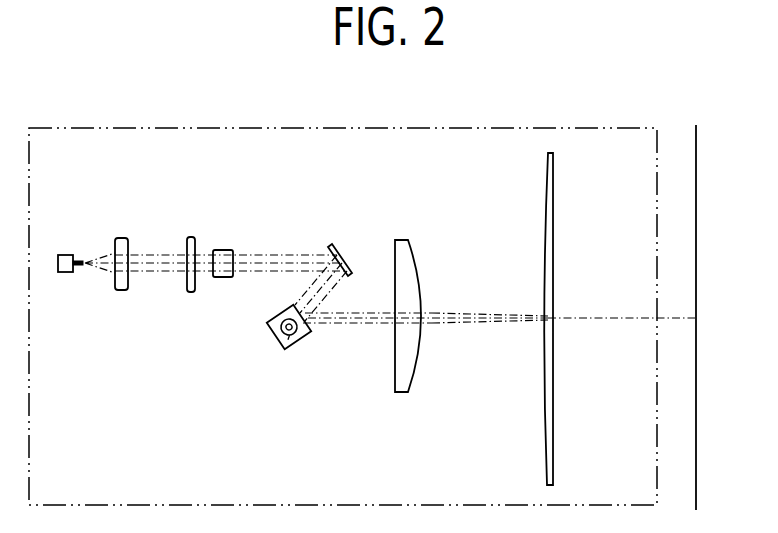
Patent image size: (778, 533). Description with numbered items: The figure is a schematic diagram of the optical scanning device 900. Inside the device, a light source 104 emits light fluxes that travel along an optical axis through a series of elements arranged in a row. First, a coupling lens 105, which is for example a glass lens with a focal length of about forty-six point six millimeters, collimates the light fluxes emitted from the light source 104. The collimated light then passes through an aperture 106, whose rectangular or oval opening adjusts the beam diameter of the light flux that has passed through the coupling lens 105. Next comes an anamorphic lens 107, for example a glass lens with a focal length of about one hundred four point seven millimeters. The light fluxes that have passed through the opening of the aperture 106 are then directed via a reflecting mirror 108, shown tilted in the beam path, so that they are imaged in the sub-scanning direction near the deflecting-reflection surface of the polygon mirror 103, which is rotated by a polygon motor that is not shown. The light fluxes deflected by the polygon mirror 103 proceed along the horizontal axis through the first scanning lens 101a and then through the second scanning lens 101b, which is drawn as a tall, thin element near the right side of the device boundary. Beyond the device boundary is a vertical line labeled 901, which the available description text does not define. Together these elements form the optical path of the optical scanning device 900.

The optical scanning device 900 is at (514, 127).
The projection surface 901 is at (697, 143).
The polygon mirror 103 is at (273, 340).
The light source 104 is at (62, 254).
The coupling lens 105 is at (118, 237).
The aperture 106 is at (189, 236).
The anamorphic lens 107 is at (223, 249).
The reflecting mirror 108 is at (339, 256).
The scanning lens 101a is at (412, 252).
The scanning lens 101b is at (555, 206).